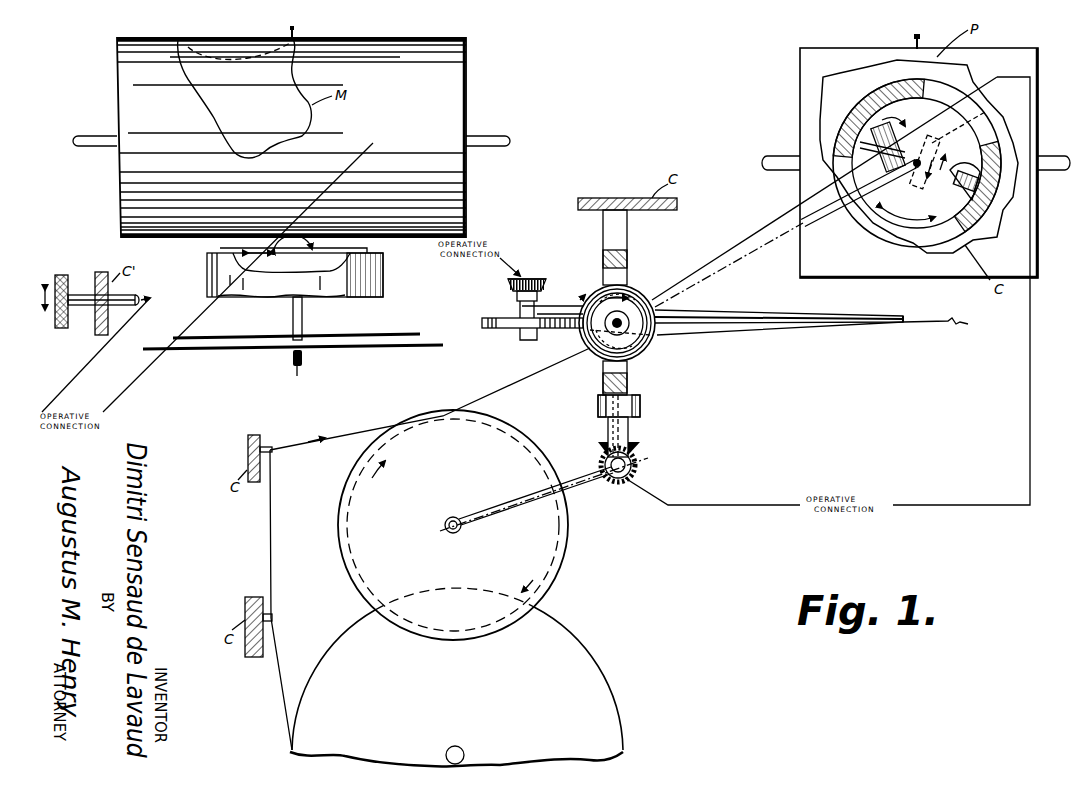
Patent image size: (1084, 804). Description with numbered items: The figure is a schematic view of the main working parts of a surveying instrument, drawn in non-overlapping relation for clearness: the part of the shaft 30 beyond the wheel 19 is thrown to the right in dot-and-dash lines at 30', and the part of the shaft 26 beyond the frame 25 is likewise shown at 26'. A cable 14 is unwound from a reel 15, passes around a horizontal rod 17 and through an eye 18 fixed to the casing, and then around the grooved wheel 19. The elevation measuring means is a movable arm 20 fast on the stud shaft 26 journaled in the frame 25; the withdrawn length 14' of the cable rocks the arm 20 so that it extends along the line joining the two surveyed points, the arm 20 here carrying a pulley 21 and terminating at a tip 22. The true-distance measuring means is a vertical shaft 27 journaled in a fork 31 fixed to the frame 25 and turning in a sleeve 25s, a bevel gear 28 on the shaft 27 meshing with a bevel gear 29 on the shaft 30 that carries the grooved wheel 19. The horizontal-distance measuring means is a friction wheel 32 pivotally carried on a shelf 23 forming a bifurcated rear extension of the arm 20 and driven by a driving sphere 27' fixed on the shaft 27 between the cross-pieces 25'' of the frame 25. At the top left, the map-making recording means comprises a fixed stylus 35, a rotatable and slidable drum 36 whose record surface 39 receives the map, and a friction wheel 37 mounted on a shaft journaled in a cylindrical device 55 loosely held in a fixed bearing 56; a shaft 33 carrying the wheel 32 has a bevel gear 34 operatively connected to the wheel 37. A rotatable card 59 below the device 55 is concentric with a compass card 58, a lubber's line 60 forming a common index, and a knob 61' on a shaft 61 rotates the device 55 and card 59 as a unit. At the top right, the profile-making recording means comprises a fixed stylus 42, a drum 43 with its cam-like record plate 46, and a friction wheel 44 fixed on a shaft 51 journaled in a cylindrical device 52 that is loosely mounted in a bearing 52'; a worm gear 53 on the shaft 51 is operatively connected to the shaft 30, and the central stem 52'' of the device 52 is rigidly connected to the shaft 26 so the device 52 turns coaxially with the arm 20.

The cable 14 is at (430, 549).
The length of cable 14' is at (812, 335).
The reel 15 is at (540, 628).
The horizontal rod 17 is at (276, 615).
The eye 18 is at (273, 455).
The grooved wheel 19 is at (550, 536).
The movable arm 20 is at (780, 313).
The pulley 21 is at (650, 352).
The pointer tip 22 is at (900, 325).
The shelf 23 is at (540, 312).
The frame 25 is at (628, 302).
The cross-pieces 25'' is at (638, 321).
The sleeve 25s is at (642, 408).
The stud shaft 26 is at (824, 193).
The offset shaft portion 26' is at (729, 265).
The vertical shaft 27 is at (610, 363).
The driving sphere 27' is at (631, 335).
The bevel gear 28 is at (636, 447).
The bevel gear 29 is at (637, 464).
The shaft 30 is at (442, 540).
The shaft portion 30' is at (544, 494).
The fork 31 is at (606, 420).
The friction wheel 32 is at (500, 326).
The shaft 33 is at (512, 288).
The bevel gear 34 is at (540, 280).
The fixed stylus 35 is at (296, 34).
The drum 36 is at (468, 172).
The friction wheel 37 is at (246, 268).
The drum surface 39 is at (452, 93).
The fixed stylus 42 is at (920, 40).
The drum 43 is at (798, 70).
The friction wheel 44 is at (985, 112).
The cam plate 46 is at (812, 82).
The rotatable shaft 51 is at (990, 208).
The cylindrical device 52 is at (917, 175).
The cylindrical bearing 52' is at (917, 195).
The central stem 52'' is at (861, 207).
The worm gear 53 is at (860, 100).
The cylindrical device 55 is at (370, 249).
The cylindrical bearing 56 is at (254, 290).
The compass card 58 is at (375, 347).
The rotatable card 59 is at (345, 336).
The lubber's line 60 is at (292, 346).
The shaft 61 is at (96, 333).
The knob 61' is at (57, 317).